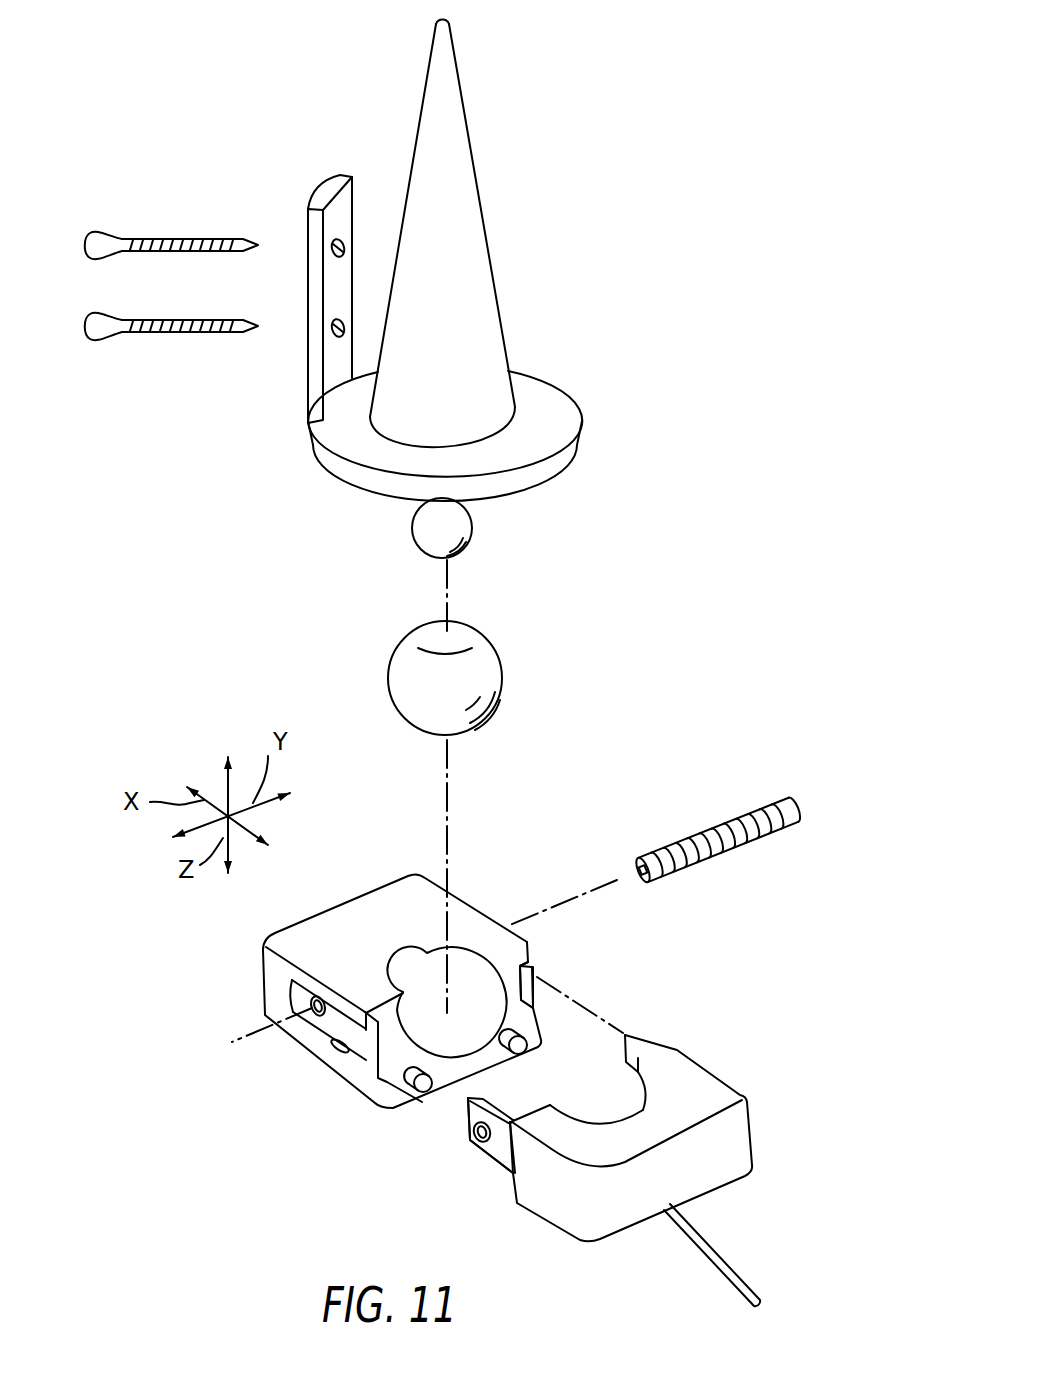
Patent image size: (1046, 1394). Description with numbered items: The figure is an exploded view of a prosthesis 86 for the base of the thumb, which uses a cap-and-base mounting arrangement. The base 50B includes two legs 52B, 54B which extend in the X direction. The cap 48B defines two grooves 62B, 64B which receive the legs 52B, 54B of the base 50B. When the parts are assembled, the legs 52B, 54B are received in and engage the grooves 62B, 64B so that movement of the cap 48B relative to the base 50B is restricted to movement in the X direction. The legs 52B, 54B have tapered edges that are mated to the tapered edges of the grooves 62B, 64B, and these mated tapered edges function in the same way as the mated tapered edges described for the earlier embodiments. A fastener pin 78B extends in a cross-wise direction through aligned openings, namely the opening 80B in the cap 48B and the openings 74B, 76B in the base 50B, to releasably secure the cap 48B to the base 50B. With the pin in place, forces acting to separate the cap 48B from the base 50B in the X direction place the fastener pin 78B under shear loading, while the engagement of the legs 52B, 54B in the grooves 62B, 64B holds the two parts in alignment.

The prosthesis 86 is at (610, 712).
The cap 48B is at (472, 903).
The base 50B is at (727, 1082).
The fastener pin 78B is at (742, 815).
The groove 64B is at (533, 992).
The opening 76B is at (614, 1045).
The leg 54B is at (648, 1047).
The opening 80B is at (312, 1006).
The groove 62B is at (337, 1044).
The opening 74B is at (478, 1136).
The leg 52B is at (477, 1158).